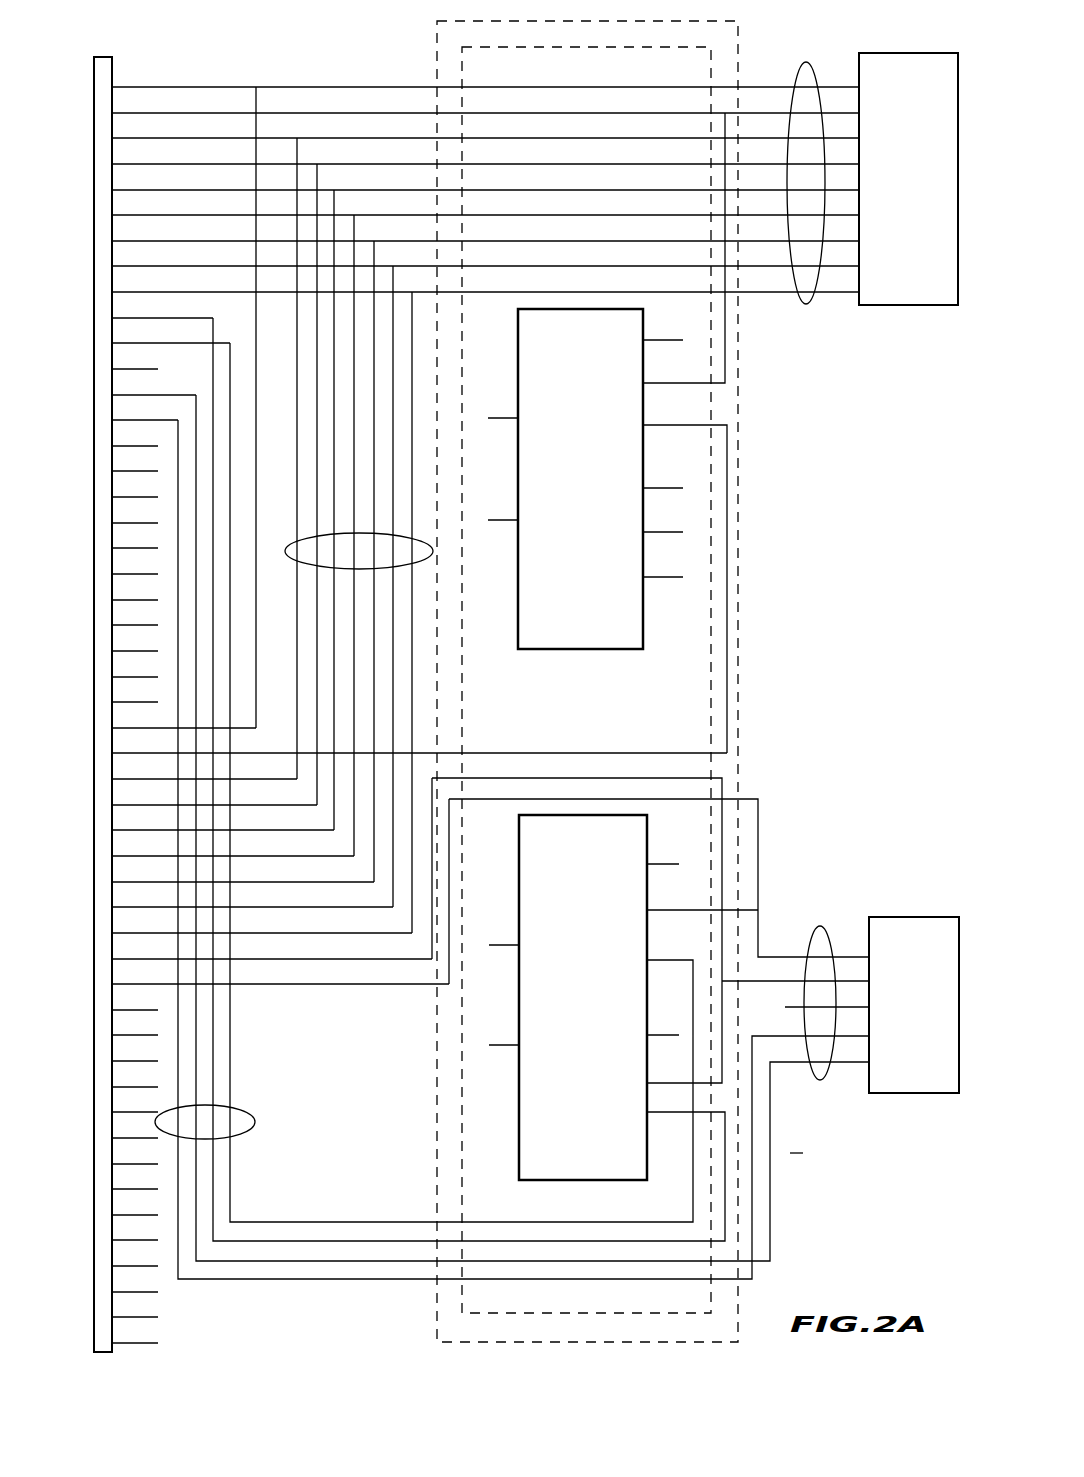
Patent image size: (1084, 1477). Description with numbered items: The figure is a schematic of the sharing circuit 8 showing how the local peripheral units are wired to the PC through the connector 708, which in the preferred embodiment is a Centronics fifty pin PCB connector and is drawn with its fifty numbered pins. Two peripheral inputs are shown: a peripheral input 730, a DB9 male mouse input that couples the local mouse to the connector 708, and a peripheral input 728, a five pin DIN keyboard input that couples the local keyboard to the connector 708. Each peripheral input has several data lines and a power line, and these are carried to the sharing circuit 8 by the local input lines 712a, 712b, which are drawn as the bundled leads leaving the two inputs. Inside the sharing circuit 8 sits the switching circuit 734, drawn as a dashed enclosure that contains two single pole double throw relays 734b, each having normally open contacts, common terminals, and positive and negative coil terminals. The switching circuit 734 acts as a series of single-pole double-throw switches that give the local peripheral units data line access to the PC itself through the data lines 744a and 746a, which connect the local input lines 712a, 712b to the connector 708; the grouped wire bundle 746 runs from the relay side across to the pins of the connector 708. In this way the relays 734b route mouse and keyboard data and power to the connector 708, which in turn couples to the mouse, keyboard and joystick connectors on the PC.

The connector 708 is at (113, 62).
The sharing circuit 8 is at (430, 40).
The switching circuit 734 is at (440, 78).
The single pole double throw relay 734b is at (601, 470).
The peripheral input 730 is at (940, 30).
The local input line 712a is at (806, 303).
The peripheral input 728 is at (871, 1059).
The local input line 712b is at (820, 927).
The data line 746a is at (433, 551).
The wire bundle 746 is at (352, 535).
The data line 744a is at (252, 1115).